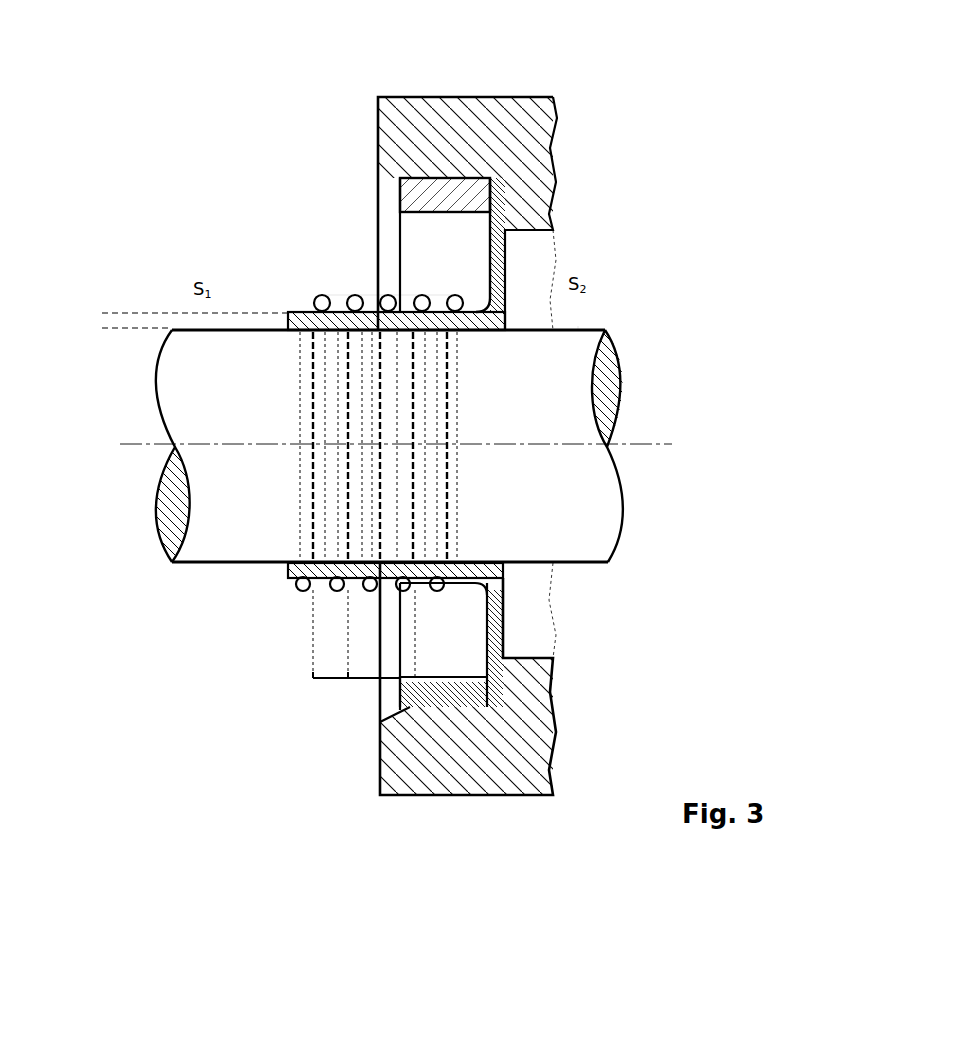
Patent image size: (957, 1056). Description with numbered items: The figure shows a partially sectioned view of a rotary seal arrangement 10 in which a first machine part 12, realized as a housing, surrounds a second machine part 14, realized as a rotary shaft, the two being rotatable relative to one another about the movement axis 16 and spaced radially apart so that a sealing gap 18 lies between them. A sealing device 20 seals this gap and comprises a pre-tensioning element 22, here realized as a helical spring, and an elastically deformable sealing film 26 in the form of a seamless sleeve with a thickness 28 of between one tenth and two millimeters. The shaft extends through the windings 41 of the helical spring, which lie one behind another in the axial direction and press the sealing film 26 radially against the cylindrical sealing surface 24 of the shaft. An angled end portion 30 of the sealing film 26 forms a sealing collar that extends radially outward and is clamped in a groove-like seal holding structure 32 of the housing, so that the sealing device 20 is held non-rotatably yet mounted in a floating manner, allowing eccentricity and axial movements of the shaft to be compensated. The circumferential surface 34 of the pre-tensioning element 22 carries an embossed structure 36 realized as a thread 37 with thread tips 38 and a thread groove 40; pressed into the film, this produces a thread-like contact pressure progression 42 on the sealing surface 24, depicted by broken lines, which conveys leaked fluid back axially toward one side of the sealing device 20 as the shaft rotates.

The seal arrangement 10 is at (712, 124).
The first machine part 12 is at (524, 159).
The second machine part 14 is at (532, 504).
The movement axis 16 is at (633, 443).
The sealing gap 18 is at (540, 301).
The sealing device 20 is at (338, 262).
The pre-tensioning element 22 is at (316, 298).
The sealing surface 24 is at (578, 328).
The sealing film 26 is at (290, 312).
The thickness 28 is at (93, 313).
The end portion 30 is at (505, 250).
The seal holding structure 32 is at (460, 203).
The circumferential surface 34 is at (420, 313).
The embossed structure 36 is at (376, 314).
The thread 37 is at (379, 317).
The thread tips 38 is at (460, 330).
The thread groove 40 is at (374, 302).
The windings 41 is at (413, 688).
The contact pressure progression 42 is at (381, 477).